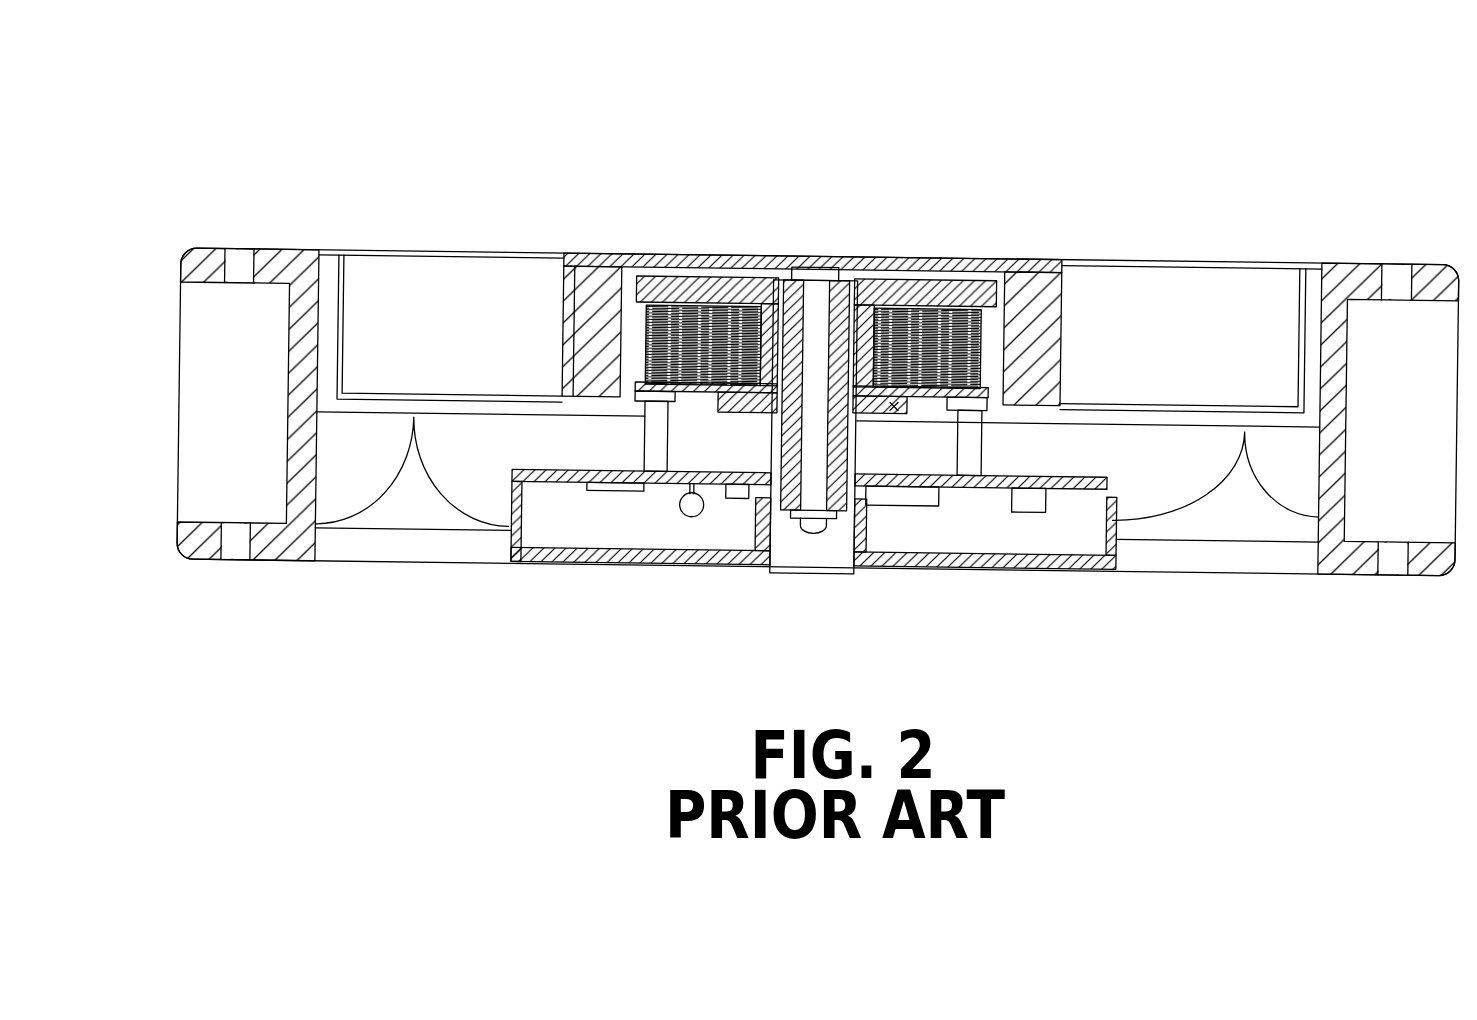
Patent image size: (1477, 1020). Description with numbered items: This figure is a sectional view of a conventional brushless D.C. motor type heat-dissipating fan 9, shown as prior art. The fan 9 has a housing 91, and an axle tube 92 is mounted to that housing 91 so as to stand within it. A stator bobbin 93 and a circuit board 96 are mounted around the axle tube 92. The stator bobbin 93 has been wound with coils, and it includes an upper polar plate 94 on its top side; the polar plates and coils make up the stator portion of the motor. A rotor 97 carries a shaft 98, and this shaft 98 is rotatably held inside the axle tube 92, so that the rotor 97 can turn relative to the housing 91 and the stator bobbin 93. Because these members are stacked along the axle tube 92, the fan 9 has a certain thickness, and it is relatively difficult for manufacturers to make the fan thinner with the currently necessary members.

The D.C. motor type heat-dissipating fan 9 is at (1076, 190).
The housing 91 is at (300, 252).
The axle tube 92 is at (790, 305).
The stator bobbin 93 is at (645, 345).
The upper polar plate 94 is at (965, 283).
The circuit board 96 is at (1040, 480).
The rotor 97 is at (452, 264).
The shaft 98 is at (814, 488).